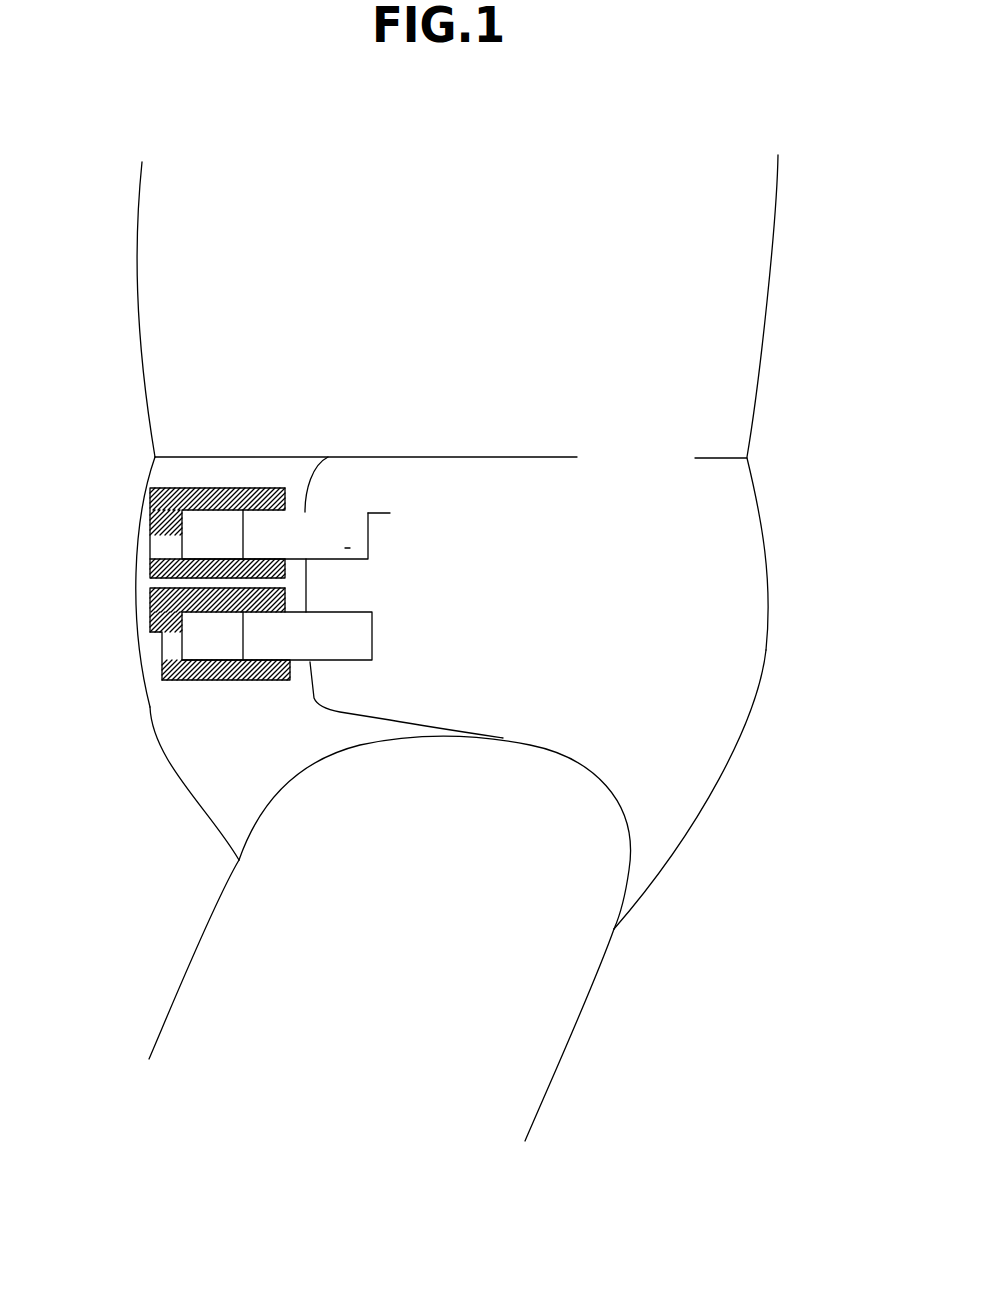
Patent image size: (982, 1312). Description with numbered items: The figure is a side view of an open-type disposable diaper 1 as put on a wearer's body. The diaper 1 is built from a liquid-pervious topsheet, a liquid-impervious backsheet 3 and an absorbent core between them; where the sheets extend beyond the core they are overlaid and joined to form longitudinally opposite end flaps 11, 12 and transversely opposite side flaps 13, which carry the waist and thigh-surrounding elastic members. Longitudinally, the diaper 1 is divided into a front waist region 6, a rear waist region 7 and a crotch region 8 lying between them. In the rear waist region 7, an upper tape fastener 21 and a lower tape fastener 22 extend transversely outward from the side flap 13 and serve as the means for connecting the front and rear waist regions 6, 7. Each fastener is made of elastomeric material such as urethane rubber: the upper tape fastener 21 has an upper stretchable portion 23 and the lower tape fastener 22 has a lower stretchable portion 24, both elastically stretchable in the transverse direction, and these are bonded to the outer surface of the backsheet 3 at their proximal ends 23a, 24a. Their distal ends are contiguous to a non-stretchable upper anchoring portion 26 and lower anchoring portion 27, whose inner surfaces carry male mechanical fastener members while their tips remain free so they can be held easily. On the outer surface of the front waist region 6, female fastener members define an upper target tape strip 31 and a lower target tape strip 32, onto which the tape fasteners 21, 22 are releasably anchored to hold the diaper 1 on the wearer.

The diaper 1 is at (485, 648).
The liquid-impervious backsheet 3 is at (757, 545).
The front waist region 6 is at (145, 658).
The rear waist region 7 is at (740, 670).
The crotch region 8 is at (214, 819).
The end flap 11 is at (198, 463).
The end flap 12 is at (593, 492).
The side flap 13 is at (565, 729).
The upper tape fastener 21 is at (374, 513).
The lower tape fastener 22 is at (376, 631).
The upper stretchable portion 23 is at (347, 513).
The proximal end 23a is at (352, 538).
The lower stretchable portion 24 is at (338, 645).
The proximal end 24a is at (357, 612).
The upper anchoring portion 26 is at (235, 520).
The lower anchoring portion 27 is at (201, 647).
The upper target tape strip 31 is at (167, 494).
The lower target tape strip 32 is at (150, 602).